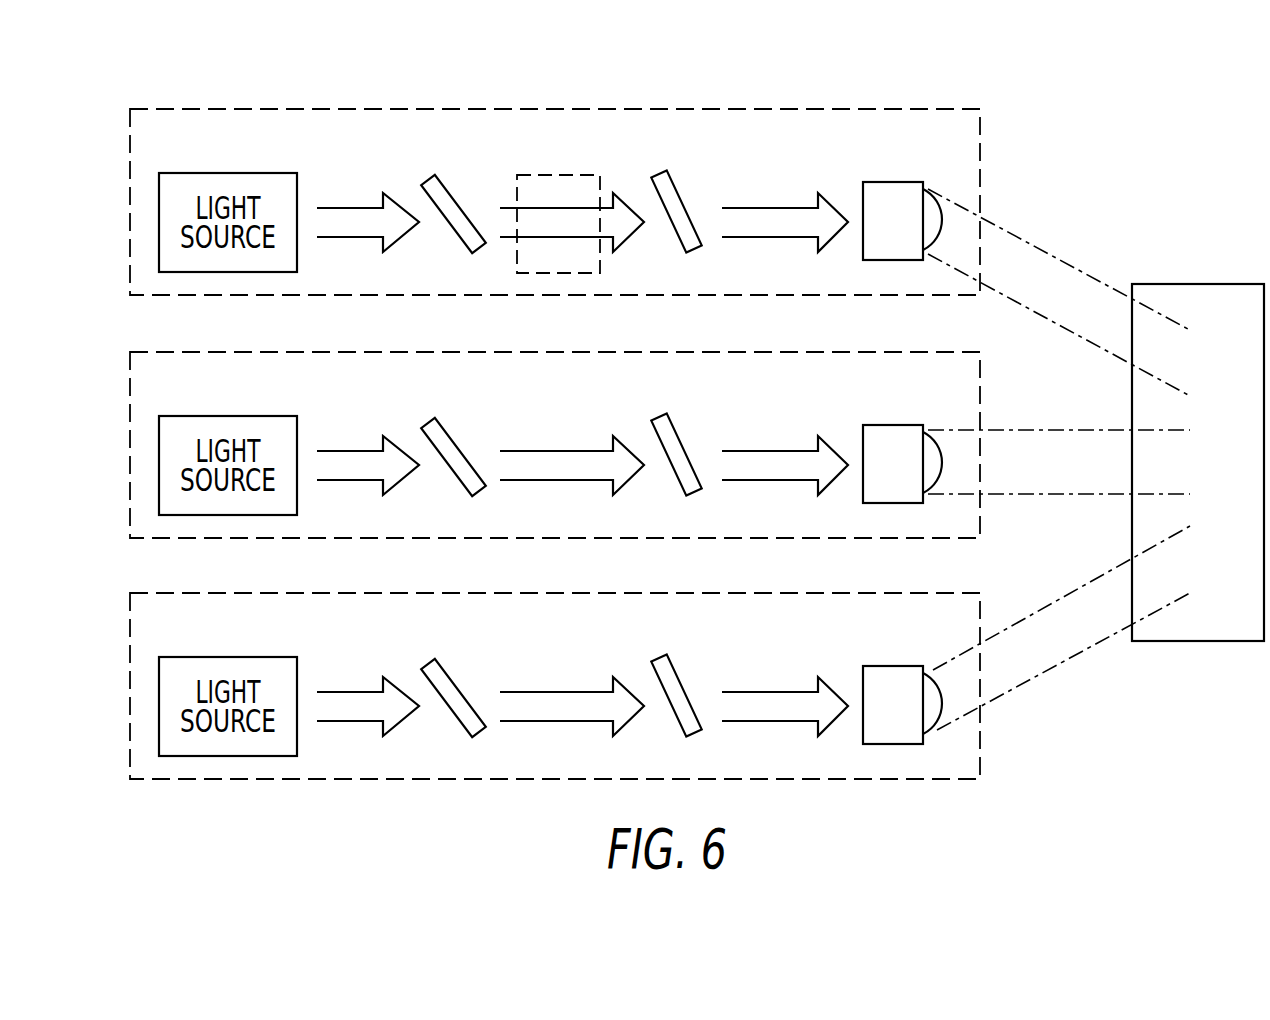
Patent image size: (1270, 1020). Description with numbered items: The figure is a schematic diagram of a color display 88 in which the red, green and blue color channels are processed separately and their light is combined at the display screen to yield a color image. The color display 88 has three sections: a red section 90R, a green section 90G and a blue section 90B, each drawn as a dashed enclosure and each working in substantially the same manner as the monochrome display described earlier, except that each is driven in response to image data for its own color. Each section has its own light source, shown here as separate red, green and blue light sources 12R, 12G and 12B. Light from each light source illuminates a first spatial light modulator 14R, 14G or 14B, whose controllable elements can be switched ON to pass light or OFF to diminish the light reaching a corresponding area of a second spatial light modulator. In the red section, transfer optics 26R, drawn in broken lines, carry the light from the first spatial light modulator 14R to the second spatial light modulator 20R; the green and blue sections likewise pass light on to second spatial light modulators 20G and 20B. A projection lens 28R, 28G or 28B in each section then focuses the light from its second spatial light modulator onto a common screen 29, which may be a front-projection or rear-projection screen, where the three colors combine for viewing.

The color display 88 is at (419, 78).
The red section 90R is at (197, 109).
The green section 90G is at (555, 423).
The blue section 90B is at (555, 664).
The red light source 12R is at (233, 173).
The green light source 12G is at (289, 441).
The blue light source 12B is at (289, 682).
The first spatial light modulator 14R is at (447, 200).
The first spatial light modulator 14G is at (532, 444).
The first spatial light modulator 14B is at (532, 685).
The transfer optics 26R is at (552, 175).
The second spatial light modulator 20R is at (672, 195).
The second spatial light modulator 20G is at (749, 441).
The second spatial light modulator 20B is at (749, 682).
The projection lens 28R is at (901, 182).
The projection lens 28G is at (1006, 439).
The projection lens 28B is at (1008, 635).
The screen 29 is at (1192, 284).